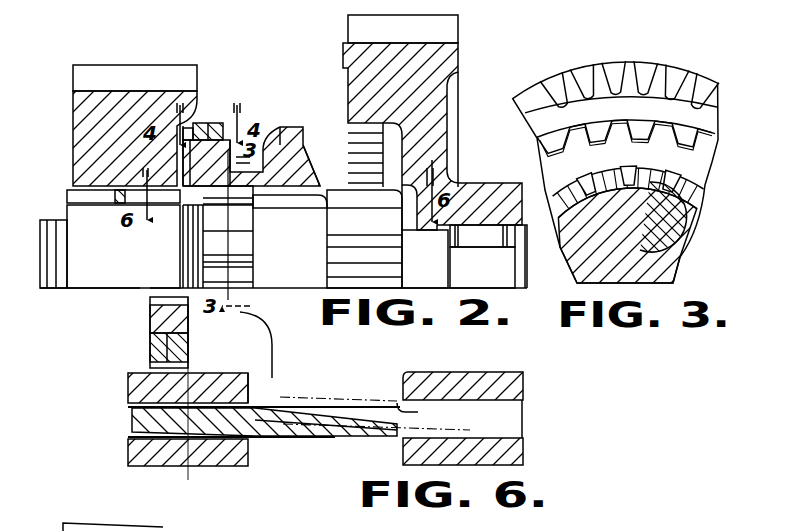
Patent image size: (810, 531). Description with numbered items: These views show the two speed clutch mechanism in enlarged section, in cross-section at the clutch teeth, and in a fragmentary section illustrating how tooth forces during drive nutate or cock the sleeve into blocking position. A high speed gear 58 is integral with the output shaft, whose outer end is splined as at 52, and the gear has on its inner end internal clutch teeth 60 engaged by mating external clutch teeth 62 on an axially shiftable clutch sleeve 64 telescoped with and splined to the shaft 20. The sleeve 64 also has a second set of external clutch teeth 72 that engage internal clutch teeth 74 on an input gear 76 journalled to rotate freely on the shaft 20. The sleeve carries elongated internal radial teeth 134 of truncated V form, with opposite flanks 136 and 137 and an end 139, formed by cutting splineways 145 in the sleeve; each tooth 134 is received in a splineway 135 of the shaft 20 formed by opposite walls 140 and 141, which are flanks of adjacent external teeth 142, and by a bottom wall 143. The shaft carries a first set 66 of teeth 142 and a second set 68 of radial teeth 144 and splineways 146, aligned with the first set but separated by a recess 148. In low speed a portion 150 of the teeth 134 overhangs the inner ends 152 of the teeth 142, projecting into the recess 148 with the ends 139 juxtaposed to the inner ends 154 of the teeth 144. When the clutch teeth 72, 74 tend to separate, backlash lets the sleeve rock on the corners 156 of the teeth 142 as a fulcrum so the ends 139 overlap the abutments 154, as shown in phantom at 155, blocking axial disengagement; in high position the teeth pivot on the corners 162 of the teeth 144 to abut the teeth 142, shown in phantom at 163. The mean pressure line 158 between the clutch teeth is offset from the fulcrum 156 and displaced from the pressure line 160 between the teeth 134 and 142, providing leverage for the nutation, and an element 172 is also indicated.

In FIG. 2, the shaft 20 is at (118, 266).
In FIG. 3, the shaft 20 is at (668, 281).
In FIG. 2, the spline 52 is at (310, 170).
In FIG. 2, the high speed gear 58 is at (442, 27).
In FIG. 2, the internal clutch teeth 60 is at (355, 131).
In FIG. 2, the external clutch teeth 62 is at (288, 127).
In FIG. 2, the clutch sleeve 64 is at (266, 150).
In FIG. 3, the clutch sleeve 64 is at (661, 186).
In FIG. 2, the set of splines 66 is at (248, 291).
In FIG. 6, the set of splines 66 is at (208, 466).
In FIG. 2, the second set of splines 68 is at (322, 290).
In FIG. 6, the second set of splines 68 is at (478, 373).
In FIG. 2, the second set of external clutch teeth 72 is at (195, 125).
In FIG. 3, the second set of external clutch teeth 72 is at (614, 138).
In FIG. 6, the second set of external clutch teeth 72 is at (150, 345).
In FIG. 2, the internal clutch teeth 74 is at (215, 123).
In FIG. 3, the internal clutch teeth 74 is at (596, 130).
In FIG. 6, the internal clutch teeth 74 is at (150, 318).
In FIG. 2, the input gear 76 is at (108, 85).
In FIG. 3, the internal radial tooth 134 is at (690, 196).
In FIG. 6, the internal radial tooth 134 is at (350, 407).
In FIG. 2, the splineway 135 is at (248, 265).
In FIG. 3, the splineway 135 is at (678, 260).
In FIG. 6, the splineway 135 is at (130, 411).
In FIG. 6, the flank 136 is at (366, 397).
In FIG. 3, the flank 137 is at (680, 187).
In FIG. 6, the flank 137 is at (280, 437).
In FIG. 6, the end of tooth 139 is at (386, 416).
In FIG. 6, the wall 140 is at (135, 398).
In FIG. 3, the wall 141 is at (631, 210).
In FIG. 6, the wall 141 is at (245, 442).
In FIG. 2, the external tooth 142 is at (245, 244).
In FIG. 3, the external tooth 142 is at (688, 226).
In FIG. 6, the external tooth 142 is at (128, 378).
In FIG. 3, the bottom wall 143 is at (688, 243).
In FIG. 2, the radial tooth 144 is at (388, 246).
In FIG. 6, the radial tooth 144 is at (524, 376).
In FIG. 3, the splineway 145 is at (636, 180).
In FIG. 2, the splineway 146 is at (345, 266).
In FIG. 6, the splineway 146 is at (512, 410).
In FIG. 2, the recess 148 is at (286, 203).
In FIG. 6, the recess 148 is at (322, 378).
In FIG. 6, the overhanging portion 150 is at (397, 438).
In FIG. 6, the inner end 152 is at (255, 368).
In FIG. 6, the inner end 154 is at (478, 375).
In FIG. 6, the phantom position 155 is at (380, 375).
In FIG. 6, the corner 156 is at (315, 408).
In FIG. 6, the line of pressure contact 158 is at (188, 345).
In FIG. 2, the line of pressure 160 is at (215, 237).
In FIG. 6, the line of pressure 160 is at (186, 480).
In FIG. 6, the corner 162 is at (415, 411).
In FIG. 6, the phantom position 163 is at (528, 421).
In FIG. 6, the base 172 is at (165, 528).